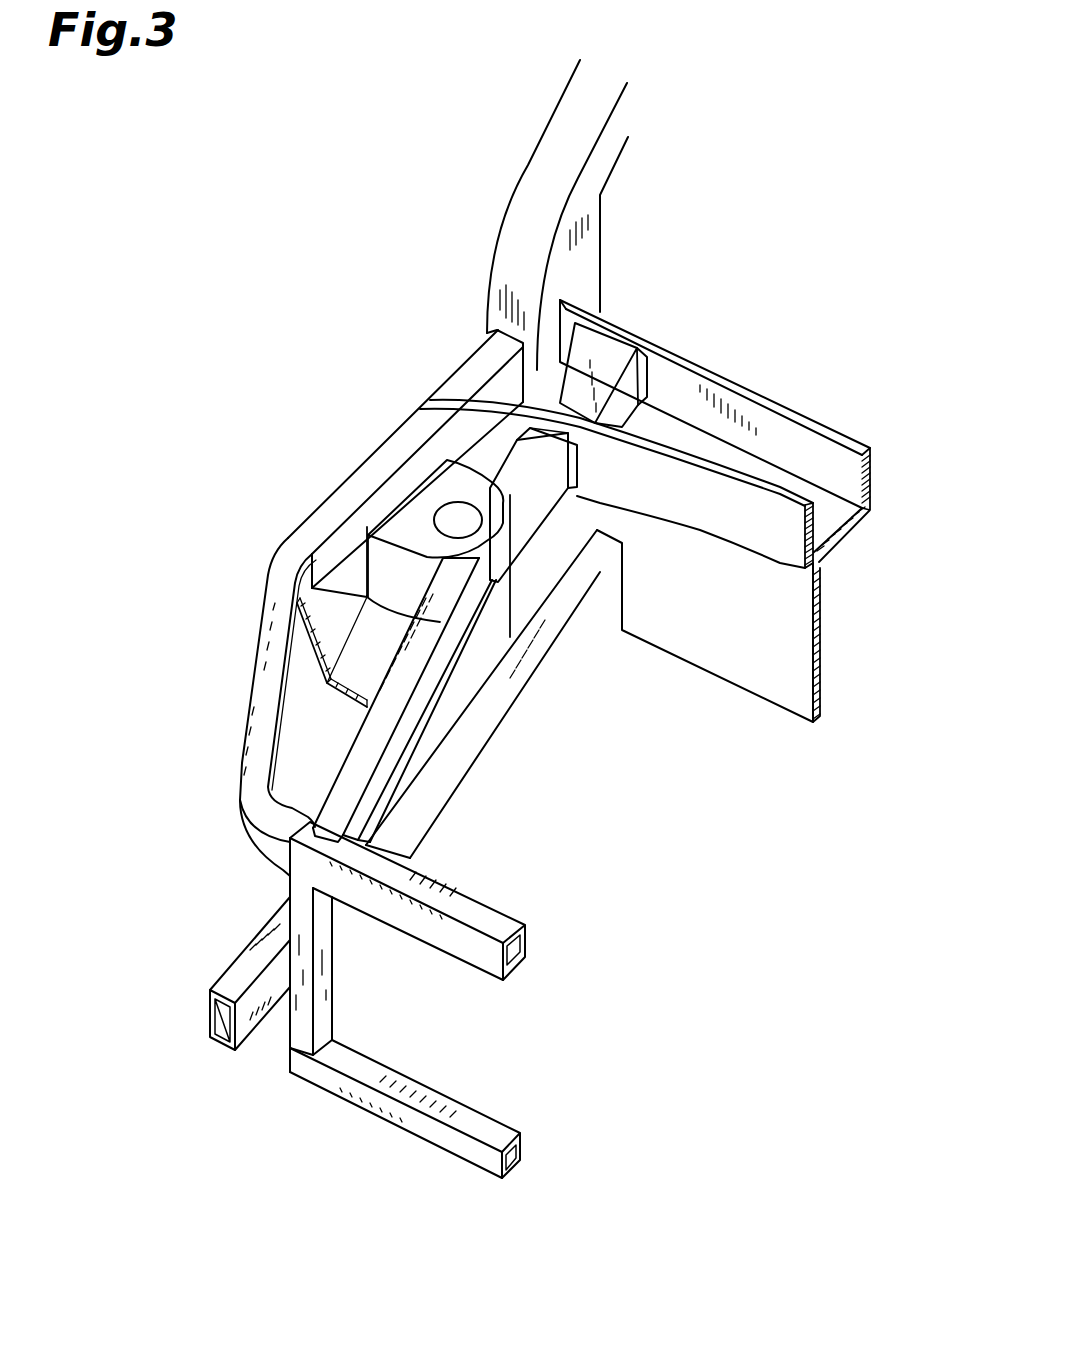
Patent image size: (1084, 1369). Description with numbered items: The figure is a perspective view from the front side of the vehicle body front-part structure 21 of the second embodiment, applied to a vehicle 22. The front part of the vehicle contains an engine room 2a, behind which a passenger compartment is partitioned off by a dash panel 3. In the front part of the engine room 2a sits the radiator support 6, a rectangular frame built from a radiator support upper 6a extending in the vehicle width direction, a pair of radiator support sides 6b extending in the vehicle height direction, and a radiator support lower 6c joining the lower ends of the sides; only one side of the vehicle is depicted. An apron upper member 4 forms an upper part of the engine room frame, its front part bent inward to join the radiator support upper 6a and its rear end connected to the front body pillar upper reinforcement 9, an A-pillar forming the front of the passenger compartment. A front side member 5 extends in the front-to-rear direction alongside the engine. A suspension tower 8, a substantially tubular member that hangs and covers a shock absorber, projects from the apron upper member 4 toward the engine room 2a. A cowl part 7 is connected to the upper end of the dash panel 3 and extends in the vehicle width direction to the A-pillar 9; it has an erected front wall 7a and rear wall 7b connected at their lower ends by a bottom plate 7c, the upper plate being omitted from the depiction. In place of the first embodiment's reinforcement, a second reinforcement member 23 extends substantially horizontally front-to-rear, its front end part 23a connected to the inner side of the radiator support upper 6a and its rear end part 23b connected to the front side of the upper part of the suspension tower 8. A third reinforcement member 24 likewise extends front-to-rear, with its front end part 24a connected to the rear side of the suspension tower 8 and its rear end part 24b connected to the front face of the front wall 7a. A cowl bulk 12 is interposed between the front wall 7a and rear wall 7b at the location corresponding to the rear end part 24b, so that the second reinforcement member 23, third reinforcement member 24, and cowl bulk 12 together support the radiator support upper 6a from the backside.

The engine room 2a is at (630, 955).
The dash panel 3 is at (828, 648).
The apron upper member 4 is at (263, 700).
The front side member 5 is at (237, 985).
The radiator support 6 is at (505, 1186).
The radiator support upper 6a is at (468, 908).
The radiator support side 6b is at (325, 977).
The radiator support lower 6c is at (385, 1105).
The cowl part 7 is at (706, 358).
The front wall 7a is at (770, 540).
The rear wall 7b is at (805, 412).
The bottom plate 7c is at (860, 537).
The suspension tower 8 is at (403, 522).
The front body pillar upper reinforcement 9 is at (560, 258).
The cowl bulk 12 is at (610, 360).
The vehicle body front-part structure 21 is at (246, 458).
The vehicle 22 is at (170, 342).
The second reinforcement member 23 is at (423, 690).
The front end part 23a is at (337, 810).
The rear end part 23b is at (460, 568).
The third reinforcement member 24 is at (540, 508).
The front end part 24a is at (560, 663).
The rear end part 24b is at (573, 490).